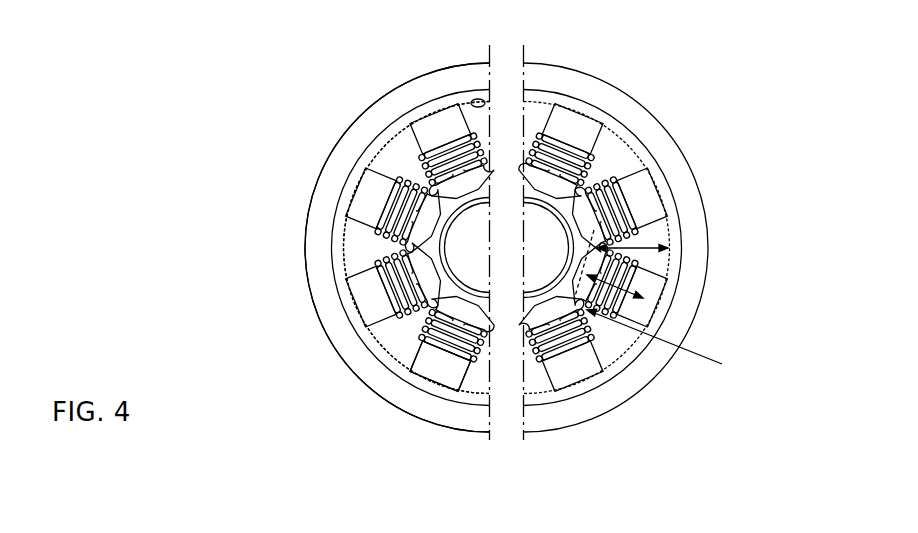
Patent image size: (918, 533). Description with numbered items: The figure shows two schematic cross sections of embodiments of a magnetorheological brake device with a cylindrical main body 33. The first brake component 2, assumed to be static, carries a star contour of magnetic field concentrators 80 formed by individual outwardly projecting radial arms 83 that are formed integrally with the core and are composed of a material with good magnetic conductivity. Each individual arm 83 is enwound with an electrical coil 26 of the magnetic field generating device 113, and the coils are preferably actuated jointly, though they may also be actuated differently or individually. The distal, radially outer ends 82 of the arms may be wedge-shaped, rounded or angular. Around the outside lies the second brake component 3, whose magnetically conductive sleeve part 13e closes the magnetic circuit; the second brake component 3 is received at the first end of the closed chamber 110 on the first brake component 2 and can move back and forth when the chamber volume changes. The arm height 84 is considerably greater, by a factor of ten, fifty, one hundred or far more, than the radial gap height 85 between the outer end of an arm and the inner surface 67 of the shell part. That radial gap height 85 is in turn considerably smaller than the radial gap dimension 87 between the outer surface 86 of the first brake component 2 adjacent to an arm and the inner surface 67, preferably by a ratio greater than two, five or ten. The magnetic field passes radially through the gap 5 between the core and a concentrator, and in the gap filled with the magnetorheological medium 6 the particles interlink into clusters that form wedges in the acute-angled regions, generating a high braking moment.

The first brake component 2 is at (412, 330).
The second brake component 3 is at (598, 435).
The sleeve part 13e is at (357, 105).
The gap 5 is at (353, 230).
The medium 6 is at (397, 167).
The electrical coil 26 is at (430, 375).
The main body 33 is at (477, 270).
The inner surface 67 is at (478, 100).
The magnetic field concentrator 80 is at (590, 132).
The radially outer end 82 is at (655, 195).
The radial arm 83 is at (367, 203).
The arm height 84 is at (645, 298).
The radial gap height 85 is at (669, 341).
The outer surface 86 is at (350, 287).
The radial gap dimension 87 is at (655, 250).
The closed chamber 110 is at (540, 112).
The magnetic field generating device 113 is at (300, 97).